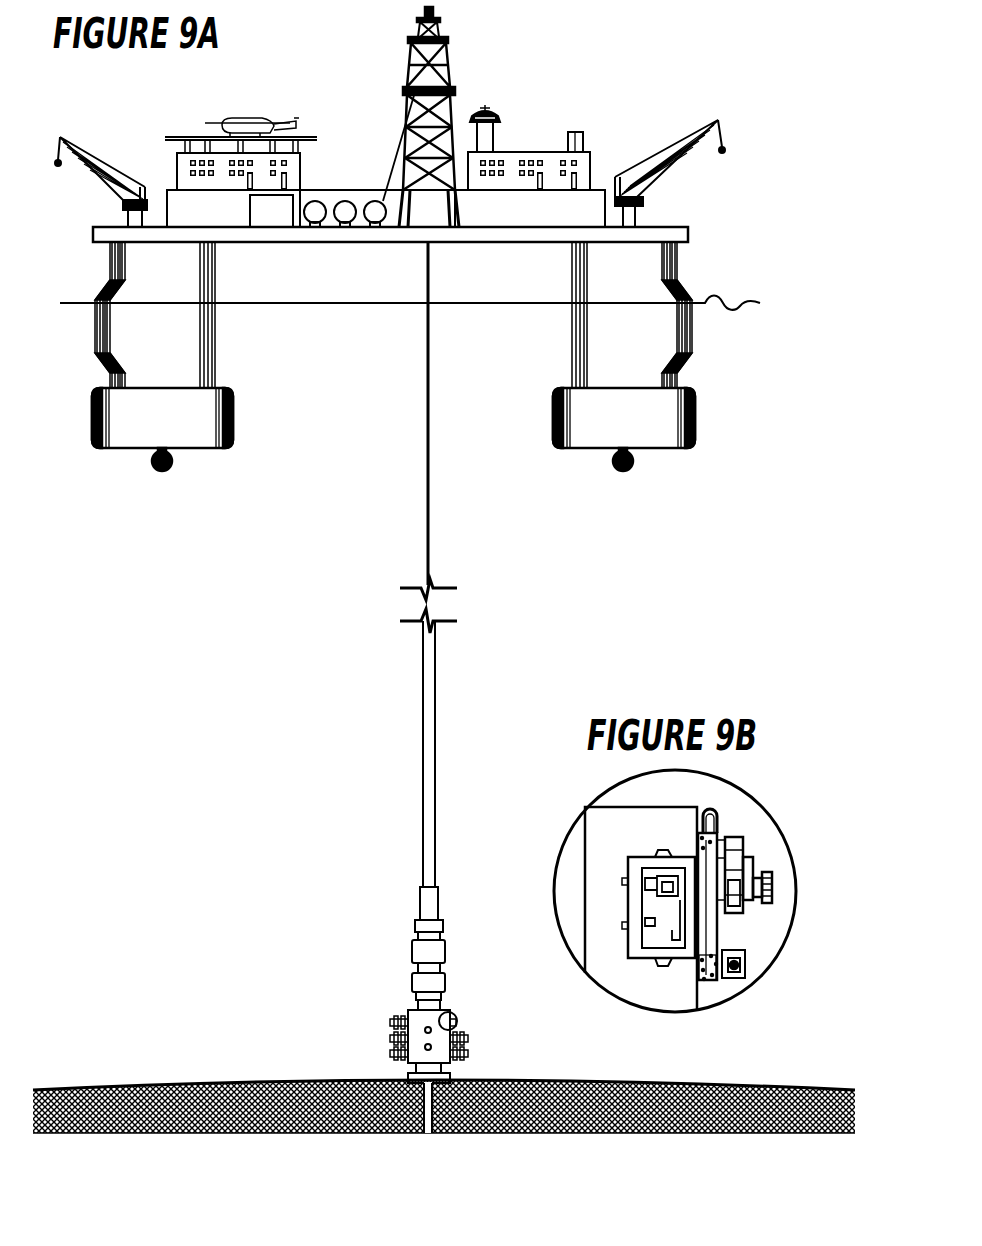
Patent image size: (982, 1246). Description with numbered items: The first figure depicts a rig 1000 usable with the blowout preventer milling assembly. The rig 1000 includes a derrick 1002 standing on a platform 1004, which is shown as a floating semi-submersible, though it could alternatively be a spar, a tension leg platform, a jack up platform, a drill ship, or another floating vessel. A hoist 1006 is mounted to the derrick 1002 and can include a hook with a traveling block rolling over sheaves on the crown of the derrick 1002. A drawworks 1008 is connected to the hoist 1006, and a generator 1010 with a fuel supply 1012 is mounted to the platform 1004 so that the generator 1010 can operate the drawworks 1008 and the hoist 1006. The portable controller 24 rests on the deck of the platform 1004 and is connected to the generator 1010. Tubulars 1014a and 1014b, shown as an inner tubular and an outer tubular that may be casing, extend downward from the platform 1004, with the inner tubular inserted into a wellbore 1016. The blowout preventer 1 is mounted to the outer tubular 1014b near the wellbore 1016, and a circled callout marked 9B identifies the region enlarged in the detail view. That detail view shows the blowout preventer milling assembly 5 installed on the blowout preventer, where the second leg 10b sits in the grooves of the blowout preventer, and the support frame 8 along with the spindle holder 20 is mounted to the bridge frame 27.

In FIG. 9A, the rig 1000 is at (698, 82).
In FIG. 9A, the derrick 1002 is at (445, 72).
In FIG. 9A, the platform 1004 is at (680, 227).
In FIG. 9A, the hoist 1006 is at (404, 127).
In FIG. 9A, the drawworks 1008 is at (376, 201).
In FIG. 9A, the generator 1010 is at (345, 201).
In FIG. 9A, the fuel supply 1012 is at (316, 201).
In FIG. 9A, the portable controller 24 is at (283, 223).
In FIG. 9A, the tubular 1014a is at (430, 410).
In FIG. 9A, the tubular 1014b is at (436, 745).
In FIG. 9A, the blowout preventer 1 is at (380, 1011).
In FIG. 9A, the detail view callout 9B is at (453, 1013).
In FIG. 9A, the wellbore 1016 is at (438, 1104).
In FIG. 9B, the blowout preventer milling assembly 5 is at (746, 822).
In FIG. 9B, the second leg 10b is at (651, 862).
In FIG. 9B, the bridge frame 27 is at (752, 878).
In FIG. 9B, the spindle holder 20 is at (774, 888).
In FIG. 9B, the support frame 8 is at (712, 980).